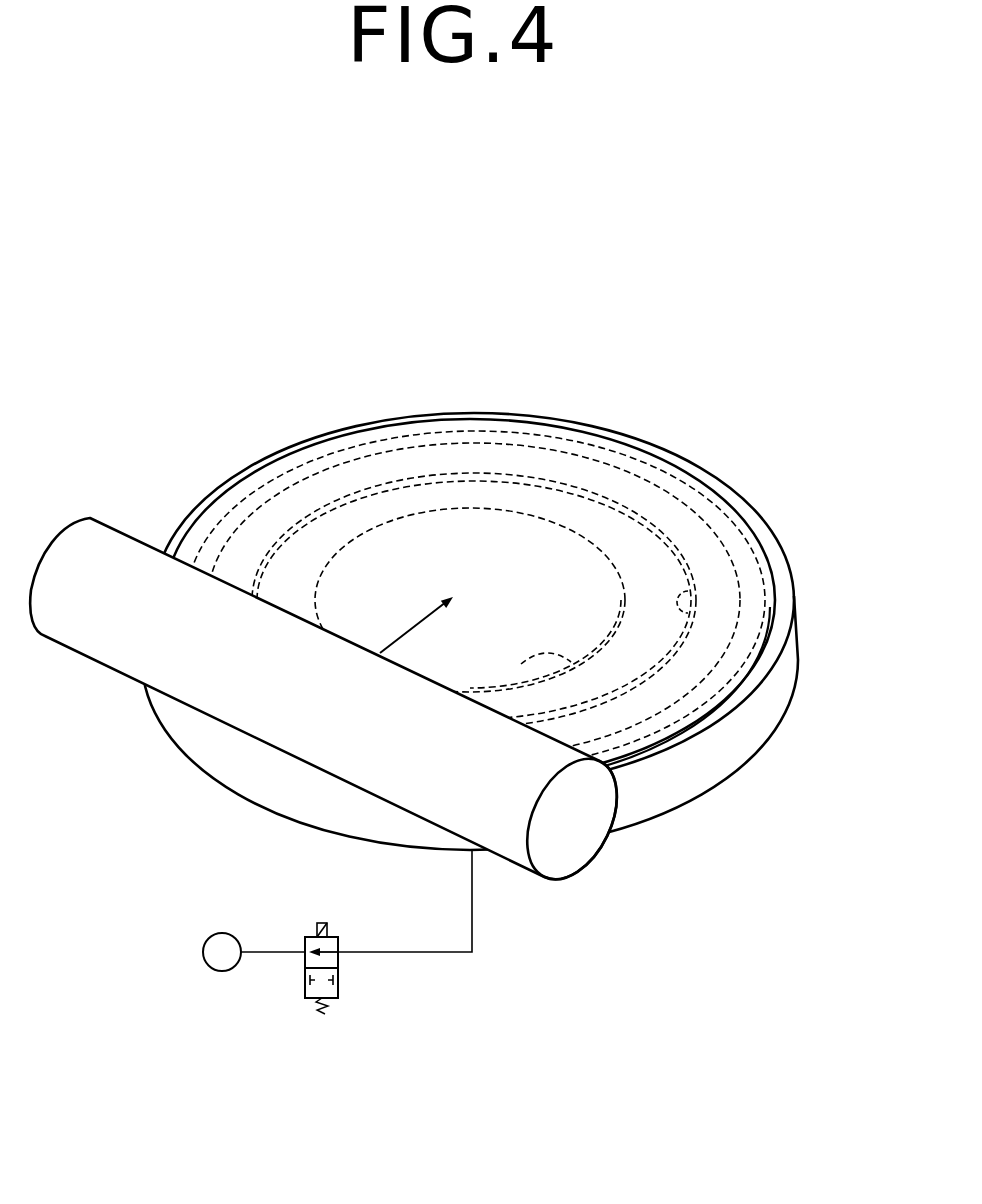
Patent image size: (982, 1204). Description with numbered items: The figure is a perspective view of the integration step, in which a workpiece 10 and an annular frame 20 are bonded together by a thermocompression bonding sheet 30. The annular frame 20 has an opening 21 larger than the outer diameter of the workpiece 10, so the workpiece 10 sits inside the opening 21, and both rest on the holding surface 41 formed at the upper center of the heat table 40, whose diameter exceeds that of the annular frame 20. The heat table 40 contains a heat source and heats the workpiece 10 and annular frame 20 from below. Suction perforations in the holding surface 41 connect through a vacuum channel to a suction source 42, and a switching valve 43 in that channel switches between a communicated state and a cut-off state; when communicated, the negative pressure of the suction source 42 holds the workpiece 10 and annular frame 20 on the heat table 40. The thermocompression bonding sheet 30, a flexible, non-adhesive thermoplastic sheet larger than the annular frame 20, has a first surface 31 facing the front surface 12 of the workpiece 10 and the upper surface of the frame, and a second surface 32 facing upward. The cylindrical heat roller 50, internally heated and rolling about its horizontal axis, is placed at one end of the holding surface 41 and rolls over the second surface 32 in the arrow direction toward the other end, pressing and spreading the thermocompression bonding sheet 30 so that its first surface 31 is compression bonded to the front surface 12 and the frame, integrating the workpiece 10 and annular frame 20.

The workpiece 10 is at (598, 547).
The front surface 12 is at (585, 662).
The annular frame 20 is at (712, 563).
The opening 21 is at (692, 594).
The thermocompression bonding sheet 30 is at (367, 423).
The first surface 31 is at (723, 703).
The second surface 32 is at (313, 467).
The heat table 40 is at (248, 462).
The holding surface 41 is at (593, 447).
The suction source 42 is at (202, 950).
The switching valve 43 is at (347, 987).
The heat roller 50 is at (150, 657).